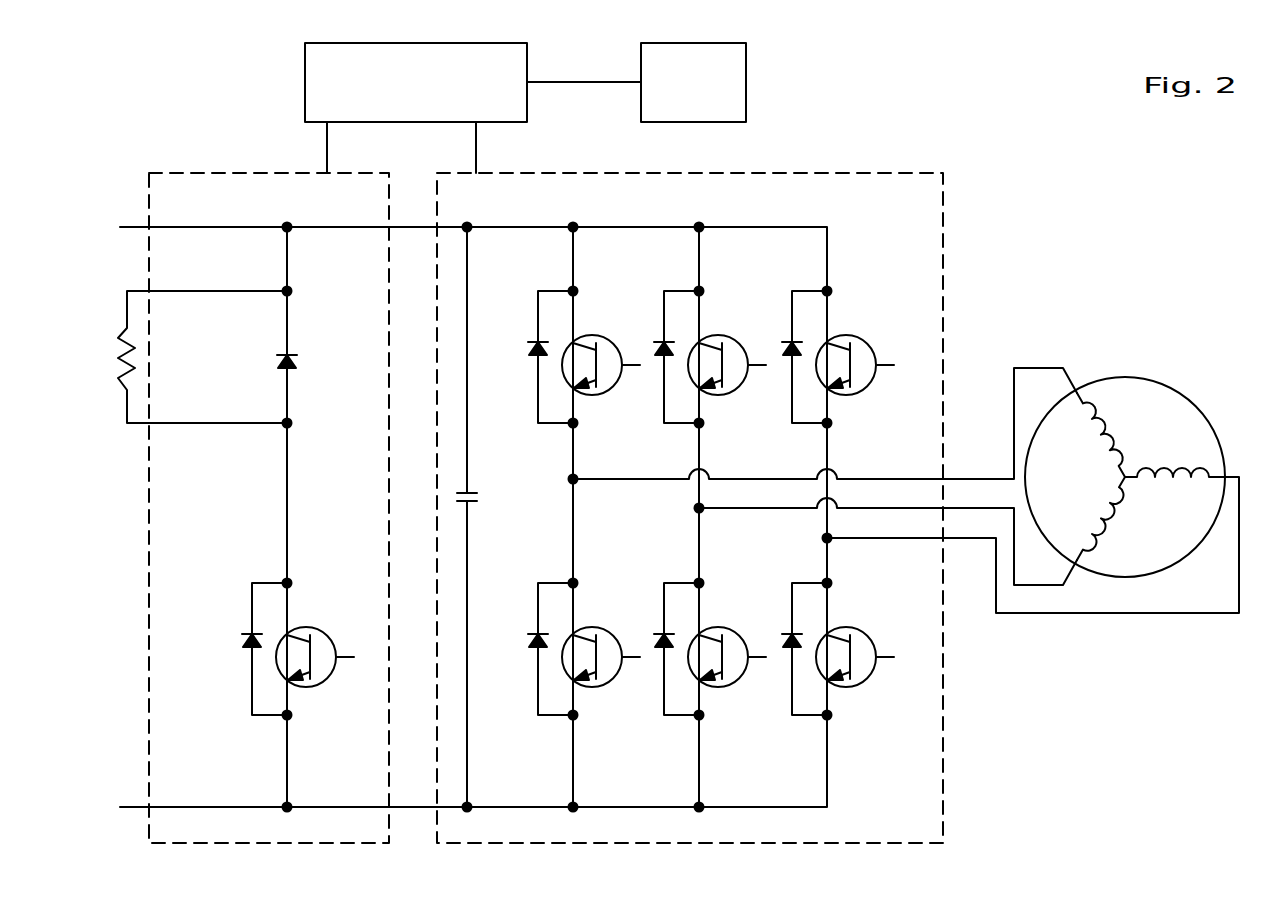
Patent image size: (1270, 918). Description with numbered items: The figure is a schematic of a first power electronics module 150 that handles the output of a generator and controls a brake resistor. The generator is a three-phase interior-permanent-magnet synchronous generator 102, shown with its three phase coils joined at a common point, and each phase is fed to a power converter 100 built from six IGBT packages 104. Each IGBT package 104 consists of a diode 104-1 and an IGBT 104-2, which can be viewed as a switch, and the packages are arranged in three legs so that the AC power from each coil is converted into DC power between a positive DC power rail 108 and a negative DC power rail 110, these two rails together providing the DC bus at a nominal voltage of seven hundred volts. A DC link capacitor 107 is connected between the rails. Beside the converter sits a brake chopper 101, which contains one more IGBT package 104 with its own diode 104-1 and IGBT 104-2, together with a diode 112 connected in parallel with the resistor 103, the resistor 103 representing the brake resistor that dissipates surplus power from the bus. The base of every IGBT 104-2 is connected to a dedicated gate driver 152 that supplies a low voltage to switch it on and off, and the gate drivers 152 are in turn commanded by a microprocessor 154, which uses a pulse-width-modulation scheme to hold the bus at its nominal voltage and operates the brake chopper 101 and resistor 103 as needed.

The power converter 100 is at (896, 207).
The brake chopper 101 is at (276, 207).
The three-phase interior-permanent-magnet synchronous generator 102 is at (1173, 430).
The resistor 103 is at (127, 387).
The IGBT package 104 is at (515, 504).
The diode 104-1 is at (501, 446).
The IGBT 104-2 is at (598, 547).
The DC link capacitor 107 is at (472, 490).
The positive DC power rail 108 is at (132, 227).
The negative DC power rail 110 is at (133, 807).
The diode 112 is at (280, 357).
The first power electronics module 150 is at (907, 102).
The gate driver 152 is at (305, 73).
The microprocessor 154 is at (746, 68).